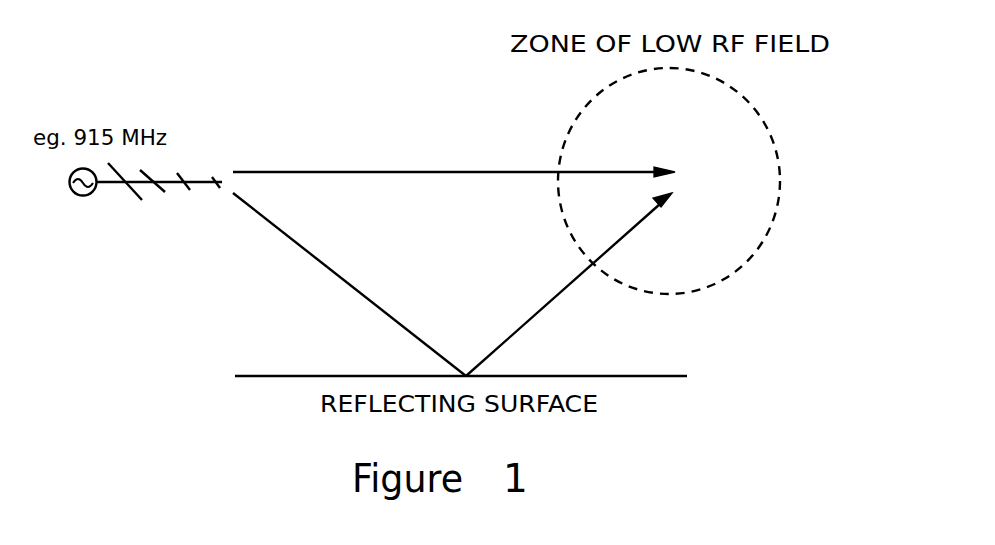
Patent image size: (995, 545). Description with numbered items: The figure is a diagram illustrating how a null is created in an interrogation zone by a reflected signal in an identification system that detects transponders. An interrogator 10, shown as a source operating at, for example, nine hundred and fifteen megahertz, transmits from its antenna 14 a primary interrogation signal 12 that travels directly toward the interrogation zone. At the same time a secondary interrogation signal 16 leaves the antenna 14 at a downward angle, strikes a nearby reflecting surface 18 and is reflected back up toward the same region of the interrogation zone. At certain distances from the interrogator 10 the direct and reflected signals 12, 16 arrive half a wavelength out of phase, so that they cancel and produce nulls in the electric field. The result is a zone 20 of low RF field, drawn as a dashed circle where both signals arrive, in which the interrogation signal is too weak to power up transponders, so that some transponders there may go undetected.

The interrogator 10 is at (83, 196).
The primary interrogation signal 12 is at (397, 172).
The antenna 14 is at (177, 190).
The secondary interrogation signal 16 is at (377, 303).
The reflecting surface 18 is at (600, 375).
The zones of weak interrogation signal 20 is at (758, 232).